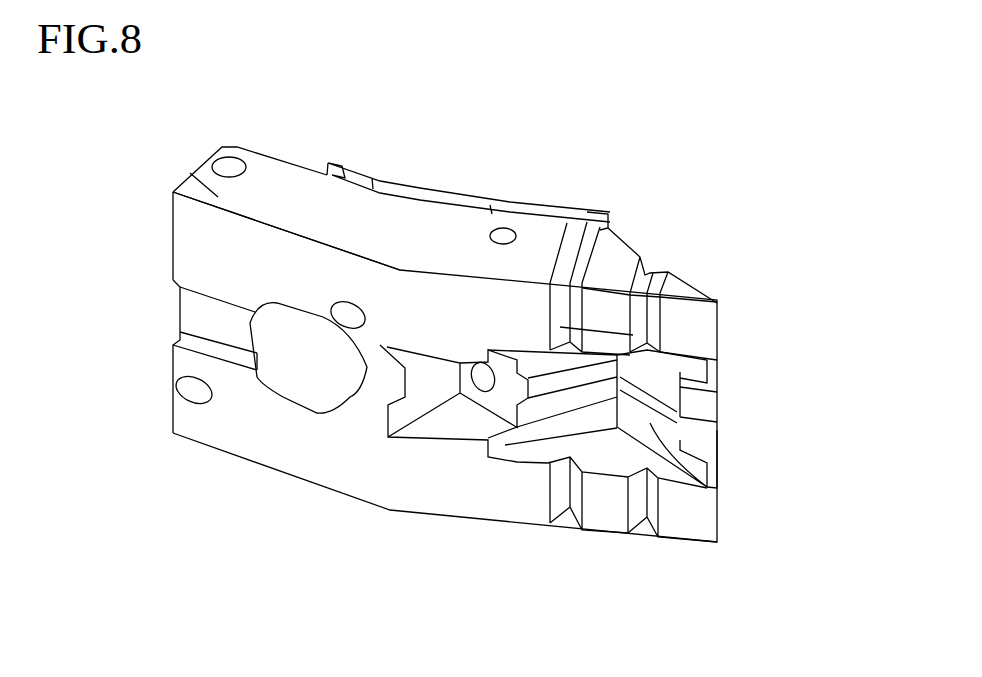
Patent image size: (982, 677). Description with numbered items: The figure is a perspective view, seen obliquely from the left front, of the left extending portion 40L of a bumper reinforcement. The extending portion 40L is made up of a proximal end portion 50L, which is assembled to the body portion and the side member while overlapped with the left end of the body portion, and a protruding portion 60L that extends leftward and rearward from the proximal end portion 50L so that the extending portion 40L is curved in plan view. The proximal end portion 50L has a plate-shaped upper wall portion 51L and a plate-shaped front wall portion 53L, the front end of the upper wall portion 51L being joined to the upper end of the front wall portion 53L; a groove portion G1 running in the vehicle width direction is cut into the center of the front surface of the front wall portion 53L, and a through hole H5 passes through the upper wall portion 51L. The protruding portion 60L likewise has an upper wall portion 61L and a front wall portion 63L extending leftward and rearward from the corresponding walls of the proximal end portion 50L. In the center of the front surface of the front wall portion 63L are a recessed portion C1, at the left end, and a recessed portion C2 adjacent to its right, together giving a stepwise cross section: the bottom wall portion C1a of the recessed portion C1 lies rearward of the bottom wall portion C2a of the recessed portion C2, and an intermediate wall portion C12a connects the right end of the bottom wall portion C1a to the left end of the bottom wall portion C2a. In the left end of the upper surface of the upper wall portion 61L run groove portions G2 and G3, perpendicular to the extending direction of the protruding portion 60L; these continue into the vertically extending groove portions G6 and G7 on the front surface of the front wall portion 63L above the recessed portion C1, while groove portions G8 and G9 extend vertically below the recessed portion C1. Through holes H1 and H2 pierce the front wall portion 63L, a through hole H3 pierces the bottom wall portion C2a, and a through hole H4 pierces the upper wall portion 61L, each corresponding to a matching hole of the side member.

The extending portion 40L is at (799, 203).
The upper wall portion 51L is at (190, 176).
The front wall portion 53L is at (203, 252).
The proximal end portion 50L is at (297, 180).
The protruding portion 60L is at (465, 225).
The upper wall portion 61L is at (550, 228).
The front wall portion 63L is at (457, 309).
The groove portion G1 is at (200, 320).
The groove portion G2 is at (598, 208).
The groove portion G3 is at (644, 275).
The groove portion G6 is at (558, 318).
The groove portion G7 is at (637, 307).
The groove portion G8 is at (556, 507).
The groove portion G9 is at (637, 495).
The through hole H1 is at (333, 314).
The through hole H2 is at (190, 390).
The through hole H3 is at (481, 380).
The through hole H4 is at (504, 236).
The through hole H5 is at (229, 167).
The recessed portion C1 is at (621, 458).
The bottom wall portion C1a is at (717, 467).
The recessed portion C2 is at (440, 428).
The bottom wall portion C2a is at (517, 400).
The intermediate wall portion C12a is at (538, 424).